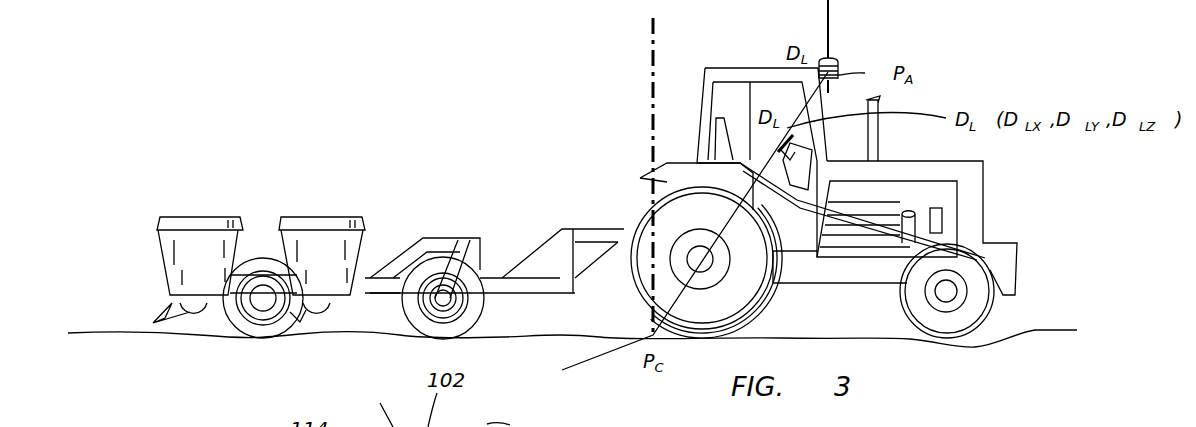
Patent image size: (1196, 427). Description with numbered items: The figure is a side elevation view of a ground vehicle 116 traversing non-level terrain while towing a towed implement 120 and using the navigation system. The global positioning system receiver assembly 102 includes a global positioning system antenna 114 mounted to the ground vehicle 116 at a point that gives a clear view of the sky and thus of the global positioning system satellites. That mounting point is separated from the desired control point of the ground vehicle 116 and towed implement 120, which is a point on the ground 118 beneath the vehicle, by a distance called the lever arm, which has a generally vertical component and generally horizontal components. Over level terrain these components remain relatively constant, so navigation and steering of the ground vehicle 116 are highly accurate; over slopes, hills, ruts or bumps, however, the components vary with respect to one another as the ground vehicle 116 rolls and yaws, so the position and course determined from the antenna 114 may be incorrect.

The global positioning system receiver assembly 102 is at (836, 66).
The global positioning system antenna 114 is at (832, 58).
The ground vehicle 116 is at (983, 194).
The ground 118 is at (667, 234).
The towed implement 120 is at (430, 238).